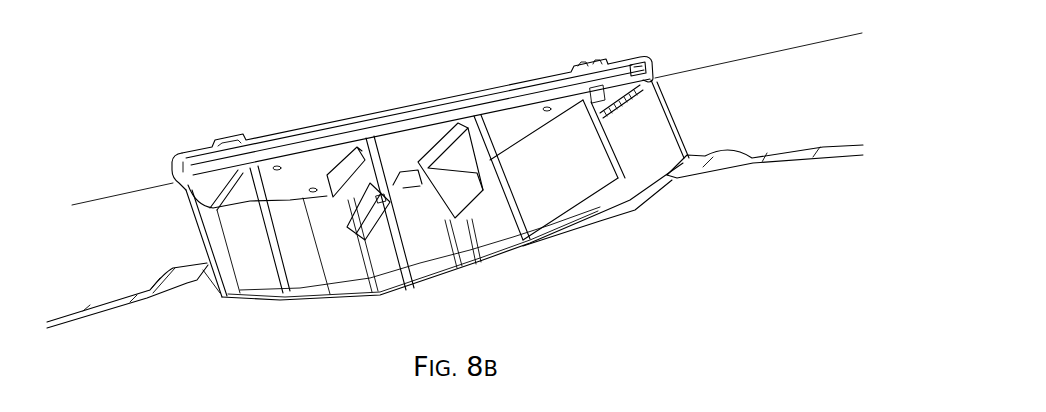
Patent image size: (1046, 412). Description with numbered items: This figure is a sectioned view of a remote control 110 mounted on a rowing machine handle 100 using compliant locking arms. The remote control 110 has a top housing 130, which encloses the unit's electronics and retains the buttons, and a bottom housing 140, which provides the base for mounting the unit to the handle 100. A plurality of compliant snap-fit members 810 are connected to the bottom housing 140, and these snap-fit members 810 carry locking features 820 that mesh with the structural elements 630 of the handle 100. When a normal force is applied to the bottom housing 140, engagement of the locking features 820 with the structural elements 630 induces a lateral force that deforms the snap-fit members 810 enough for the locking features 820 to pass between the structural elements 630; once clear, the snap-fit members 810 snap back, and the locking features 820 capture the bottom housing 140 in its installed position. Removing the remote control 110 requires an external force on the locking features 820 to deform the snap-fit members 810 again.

The rowing machine handle 100 is at (652, 201).
The remote control unit 110 is at (206, 118).
The top housing 130 is at (656, 55).
The bottom housing 140 is at (662, 72).
The structural elements 630 is at (351, 193).
The compliant snap-fit members 810 is at (447, 156).
The locking features 820 is at (378, 214).